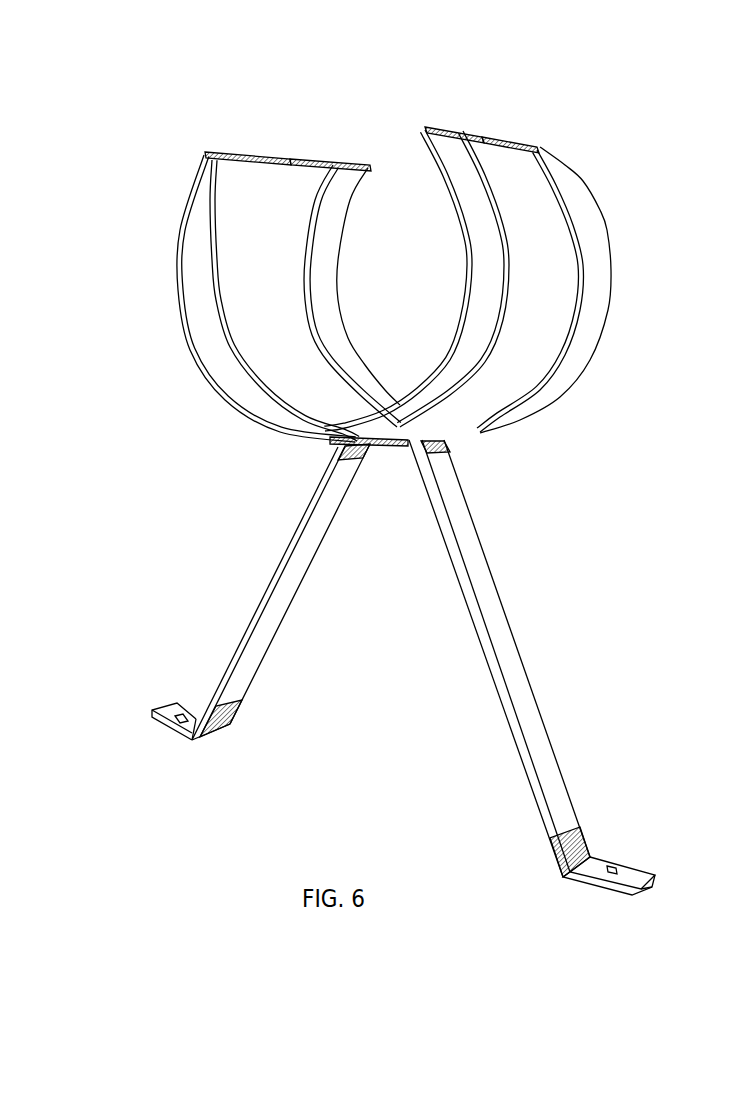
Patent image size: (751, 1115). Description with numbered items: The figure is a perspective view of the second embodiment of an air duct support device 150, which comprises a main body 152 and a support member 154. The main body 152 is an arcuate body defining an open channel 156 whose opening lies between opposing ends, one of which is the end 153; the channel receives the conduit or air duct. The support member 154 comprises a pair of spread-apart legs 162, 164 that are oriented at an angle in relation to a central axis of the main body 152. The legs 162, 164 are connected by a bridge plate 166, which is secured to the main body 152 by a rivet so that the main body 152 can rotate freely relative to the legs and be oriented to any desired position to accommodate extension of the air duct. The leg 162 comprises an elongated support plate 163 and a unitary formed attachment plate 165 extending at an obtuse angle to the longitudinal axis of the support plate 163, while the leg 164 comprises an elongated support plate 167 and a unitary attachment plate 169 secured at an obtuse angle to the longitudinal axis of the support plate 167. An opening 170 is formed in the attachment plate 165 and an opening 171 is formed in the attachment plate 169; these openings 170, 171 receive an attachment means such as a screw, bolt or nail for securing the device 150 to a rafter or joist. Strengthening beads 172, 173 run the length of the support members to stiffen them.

The air duct support device 150 is at (583, 180).
The main body 152 is at (605, 228).
The opposing end 153 is at (292, 157).
The support member 154 is at (487, 567).
The open channel 156 is at (407, 222).
The leg 162 is at (295, 537).
The support plate 163 is at (267, 617).
The leg 164 is at (530, 678).
The attachment plate 165 is at (167, 705).
The bridge plate 166 is at (398, 447).
The support plate 167 is at (550, 778).
The attachment plate 169 is at (655, 875).
The opening 170 is at (170, 722).
The opening 171 is at (613, 870).
The strengthening bead 172 is at (242, 155).
The strengthening bead 173 is at (337, 160).